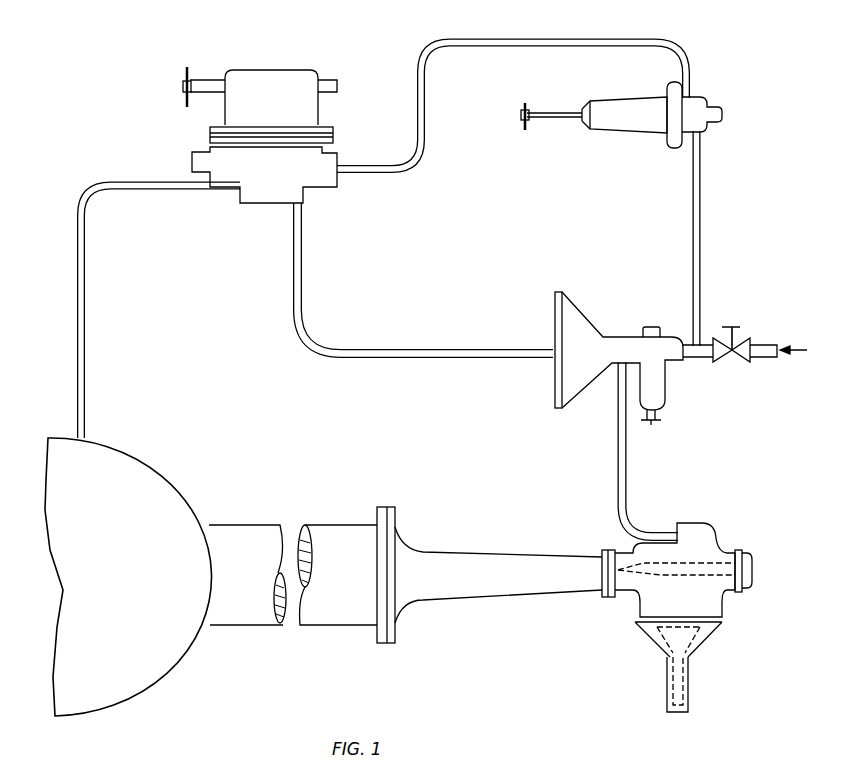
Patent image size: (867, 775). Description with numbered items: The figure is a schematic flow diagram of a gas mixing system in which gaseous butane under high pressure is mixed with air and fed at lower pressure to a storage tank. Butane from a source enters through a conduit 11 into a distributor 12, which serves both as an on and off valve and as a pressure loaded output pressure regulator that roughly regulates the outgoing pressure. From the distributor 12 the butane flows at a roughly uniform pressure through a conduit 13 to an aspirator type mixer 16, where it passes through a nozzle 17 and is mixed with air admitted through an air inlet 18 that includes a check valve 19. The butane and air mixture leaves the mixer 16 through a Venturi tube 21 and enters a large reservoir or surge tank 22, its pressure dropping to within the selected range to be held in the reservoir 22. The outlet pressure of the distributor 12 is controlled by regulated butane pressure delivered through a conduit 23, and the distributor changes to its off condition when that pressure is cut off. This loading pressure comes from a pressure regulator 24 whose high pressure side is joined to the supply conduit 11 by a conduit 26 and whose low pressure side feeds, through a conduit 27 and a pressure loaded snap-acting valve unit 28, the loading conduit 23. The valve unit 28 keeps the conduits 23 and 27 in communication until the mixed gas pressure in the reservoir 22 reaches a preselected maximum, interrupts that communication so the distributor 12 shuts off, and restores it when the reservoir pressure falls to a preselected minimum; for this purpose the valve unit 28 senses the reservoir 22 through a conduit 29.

The conduit 11 is at (703, 360).
The distributor 12 is at (583, 313).
The conduit 13 is at (615, 420).
The mixer 16 is at (700, 526).
The nozzle 17 is at (708, 563).
The air inlet 18 is at (688, 697).
The check valve 19 is at (708, 638).
The Venturi tube 21 is at (512, 593).
The reservoir 22 is at (178, 473).
The conduit 23 is at (445, 348).
The pressure regulator 24 is at (641, 132).
The conduit 26 is at (700, 193).
The conduit 27 is at (555, 40).
The snap-acting valve unit 28 is at (313, 69).
The conduit 29 is at (88, 340).